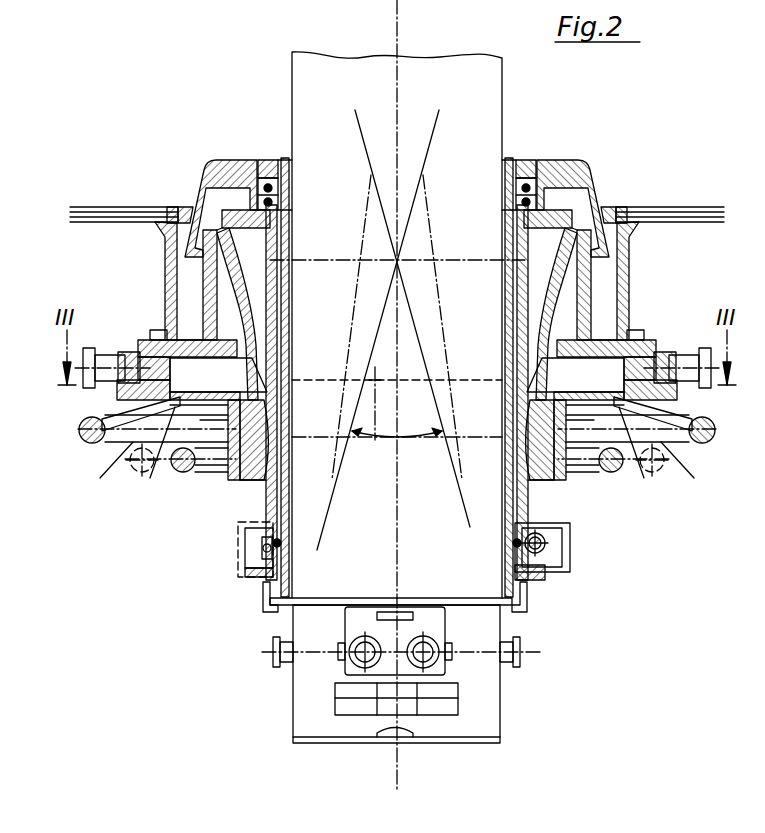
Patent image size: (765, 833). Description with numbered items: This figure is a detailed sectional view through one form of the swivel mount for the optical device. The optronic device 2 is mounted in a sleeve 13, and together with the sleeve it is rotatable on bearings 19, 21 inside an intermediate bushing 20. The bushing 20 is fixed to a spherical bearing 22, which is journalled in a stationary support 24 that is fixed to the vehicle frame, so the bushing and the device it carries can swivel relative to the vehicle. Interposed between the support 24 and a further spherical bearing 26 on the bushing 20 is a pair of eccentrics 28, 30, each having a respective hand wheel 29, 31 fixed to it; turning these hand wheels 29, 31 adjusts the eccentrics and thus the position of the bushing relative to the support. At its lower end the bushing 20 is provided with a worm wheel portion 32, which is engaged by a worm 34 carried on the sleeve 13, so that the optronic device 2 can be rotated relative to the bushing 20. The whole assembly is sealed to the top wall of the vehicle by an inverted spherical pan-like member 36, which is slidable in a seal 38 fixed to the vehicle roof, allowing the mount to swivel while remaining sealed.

The optronic device 2 is at (480, 142).
The sleeve 13 is at (515, 280).
The bearing 19 is at (515, 230).
The intermediate bushing 20 is at (520, 308).
The bearing 21 is at (518, 203).
The spherical bearing 22 is at (583, 235).
The stationary support 24 is at (652, 222).
The spherical bearing 26 is at (556, 478).
The eccentric 28 is at (176, 405).
The hand wheel 29 is at (93, 442).
The pivot 30 is at (186, 399).
The hand wheel 31 is at (185, 473).
The worm wheel portion 32 is at (540, 573).
The worm 34 is at (548, 543).
The inverted spherical pan-like member 36 is at (194, 208).
The seal 38 is at (180, 208).